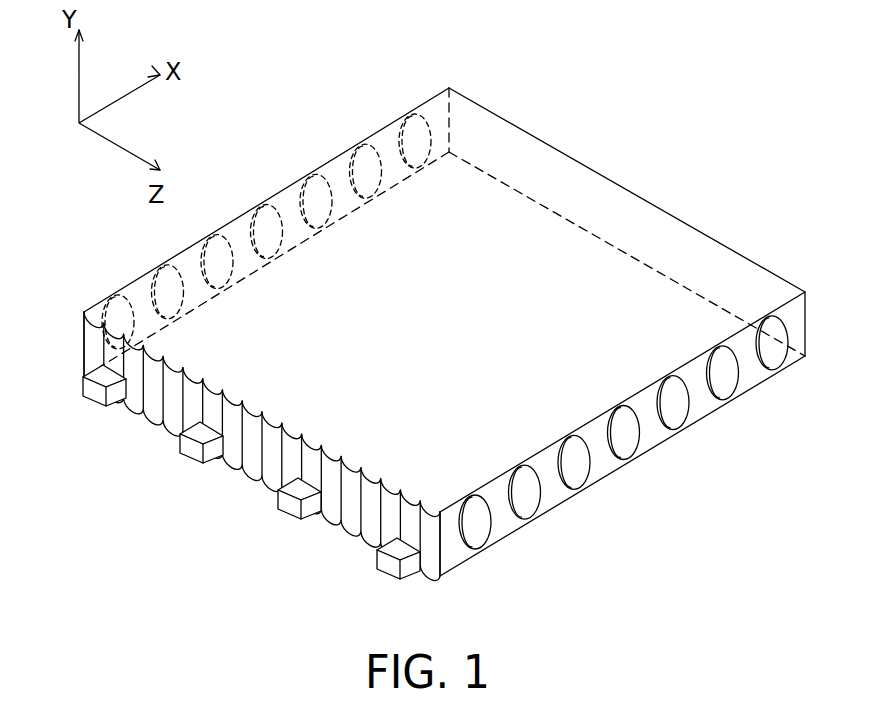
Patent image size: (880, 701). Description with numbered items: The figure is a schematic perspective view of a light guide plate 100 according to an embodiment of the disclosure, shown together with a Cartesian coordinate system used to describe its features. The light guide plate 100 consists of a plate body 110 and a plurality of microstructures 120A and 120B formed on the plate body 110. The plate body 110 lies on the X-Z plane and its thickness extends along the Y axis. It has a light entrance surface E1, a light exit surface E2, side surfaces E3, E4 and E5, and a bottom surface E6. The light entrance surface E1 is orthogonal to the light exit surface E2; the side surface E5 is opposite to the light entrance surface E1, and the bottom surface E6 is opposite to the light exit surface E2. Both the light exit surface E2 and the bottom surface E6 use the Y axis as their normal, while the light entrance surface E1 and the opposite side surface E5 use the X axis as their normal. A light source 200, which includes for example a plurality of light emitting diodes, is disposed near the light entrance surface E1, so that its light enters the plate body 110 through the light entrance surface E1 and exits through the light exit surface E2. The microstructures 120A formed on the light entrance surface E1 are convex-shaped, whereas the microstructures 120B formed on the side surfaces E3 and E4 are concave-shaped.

The light guide plate 100 is at (790, 621).
The plate body 110 is at (547, 145).
The microstructures 120A is at (138, 420).
The microstructures 120B is at (302, 207).
The light source 200 is at (392, 563).
The light entrance surface E1 is at (255, 448).
The light exit surface E2 is at (612, 215).
The side surface E3 is at (548, 482).
The side surface E4 is at (442, 128).
The side surface E5 is at (688, 257).
The bottom surface E6 is at (575, 393).